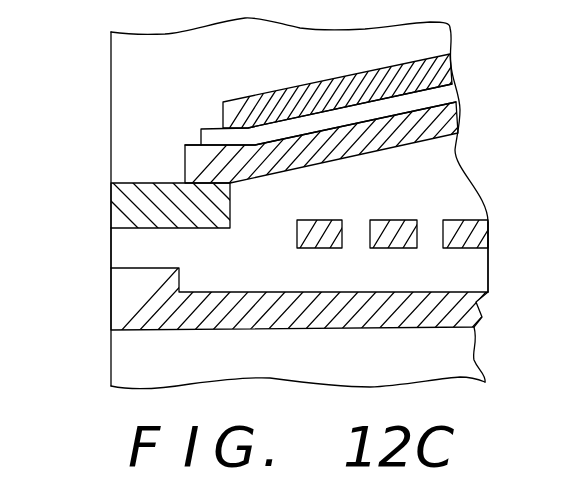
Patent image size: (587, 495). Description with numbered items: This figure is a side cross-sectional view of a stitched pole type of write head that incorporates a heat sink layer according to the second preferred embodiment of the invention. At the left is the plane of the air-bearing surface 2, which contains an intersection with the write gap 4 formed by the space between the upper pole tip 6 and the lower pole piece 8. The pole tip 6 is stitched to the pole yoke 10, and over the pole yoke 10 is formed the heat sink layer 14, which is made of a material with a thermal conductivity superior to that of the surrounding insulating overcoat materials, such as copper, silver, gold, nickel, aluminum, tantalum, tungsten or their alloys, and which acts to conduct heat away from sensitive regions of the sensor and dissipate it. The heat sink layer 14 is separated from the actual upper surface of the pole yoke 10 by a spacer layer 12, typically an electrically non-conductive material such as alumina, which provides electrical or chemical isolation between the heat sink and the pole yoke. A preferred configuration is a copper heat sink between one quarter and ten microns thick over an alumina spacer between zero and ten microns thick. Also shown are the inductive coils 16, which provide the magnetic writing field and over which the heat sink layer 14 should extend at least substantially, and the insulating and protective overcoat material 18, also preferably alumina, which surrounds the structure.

The insulating and protective overcoat material 18 is at (129, 57).
The air-bearing surface 2 is at (111, 158).
The heat sink layer 14 is at (440, 72).
The spacer layer 12 is at (212, 134).
The pole yoke 10 is at (440, 122).
The upper pole tip 6 is at (132, 203).
The inductive coils 16 is at (340, 219).
The write gap 4 is at (111, 250).
The lower pole piece 8 is at (138, 300).